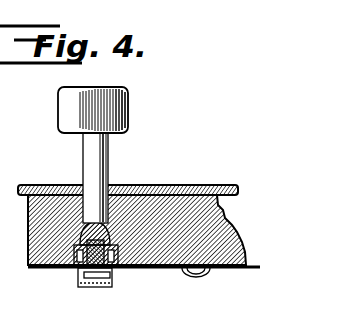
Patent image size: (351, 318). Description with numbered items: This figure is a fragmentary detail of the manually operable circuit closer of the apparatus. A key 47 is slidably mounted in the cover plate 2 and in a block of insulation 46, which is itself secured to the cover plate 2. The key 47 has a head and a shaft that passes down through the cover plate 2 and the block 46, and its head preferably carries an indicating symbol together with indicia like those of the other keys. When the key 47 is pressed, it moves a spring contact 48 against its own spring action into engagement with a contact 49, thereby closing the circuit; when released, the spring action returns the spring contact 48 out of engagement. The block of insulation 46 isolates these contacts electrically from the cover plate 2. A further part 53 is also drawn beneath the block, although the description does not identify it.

The cover plate 2 is at (165, 187).
The block of insulation 46 is at (49, 268).
The key 47 is at (90, 158).
The spring contact 48 is at (110, 276).
The contact 49 is at (99, 287).
The ring 53 is at (234, 269).